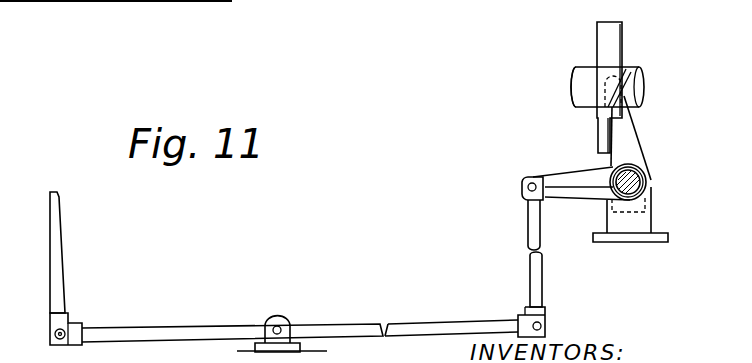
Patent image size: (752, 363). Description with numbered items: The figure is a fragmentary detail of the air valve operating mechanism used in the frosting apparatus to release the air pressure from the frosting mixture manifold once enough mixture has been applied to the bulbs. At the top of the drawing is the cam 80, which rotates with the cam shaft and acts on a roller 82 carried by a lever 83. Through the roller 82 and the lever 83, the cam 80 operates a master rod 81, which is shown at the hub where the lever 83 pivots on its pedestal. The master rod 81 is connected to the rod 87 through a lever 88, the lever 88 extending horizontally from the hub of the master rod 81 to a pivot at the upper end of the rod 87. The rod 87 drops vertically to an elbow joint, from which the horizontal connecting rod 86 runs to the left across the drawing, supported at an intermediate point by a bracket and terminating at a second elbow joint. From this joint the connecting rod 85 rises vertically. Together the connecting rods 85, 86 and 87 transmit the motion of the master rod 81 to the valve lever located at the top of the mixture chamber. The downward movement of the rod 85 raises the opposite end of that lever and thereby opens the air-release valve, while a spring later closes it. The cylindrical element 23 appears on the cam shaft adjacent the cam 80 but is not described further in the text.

The cam 80 is at (598, 30).
The cylinder 23 is at (575, 78).
The roller 82 is at (630, 89).
The lever 83 is at (655, 127).
The master rod 81 is at (632, 181).
The lever 88 is at (573, 193).
The connecting rod 87 is at (530, 274).
The connecting rod 86 is at (167, 327).
The connecting rod 85 is at (62, 261).